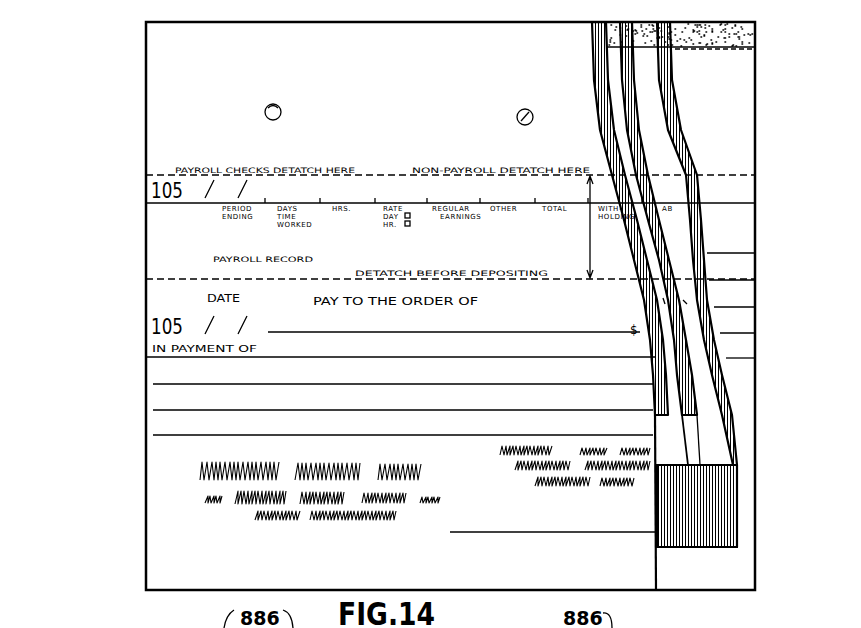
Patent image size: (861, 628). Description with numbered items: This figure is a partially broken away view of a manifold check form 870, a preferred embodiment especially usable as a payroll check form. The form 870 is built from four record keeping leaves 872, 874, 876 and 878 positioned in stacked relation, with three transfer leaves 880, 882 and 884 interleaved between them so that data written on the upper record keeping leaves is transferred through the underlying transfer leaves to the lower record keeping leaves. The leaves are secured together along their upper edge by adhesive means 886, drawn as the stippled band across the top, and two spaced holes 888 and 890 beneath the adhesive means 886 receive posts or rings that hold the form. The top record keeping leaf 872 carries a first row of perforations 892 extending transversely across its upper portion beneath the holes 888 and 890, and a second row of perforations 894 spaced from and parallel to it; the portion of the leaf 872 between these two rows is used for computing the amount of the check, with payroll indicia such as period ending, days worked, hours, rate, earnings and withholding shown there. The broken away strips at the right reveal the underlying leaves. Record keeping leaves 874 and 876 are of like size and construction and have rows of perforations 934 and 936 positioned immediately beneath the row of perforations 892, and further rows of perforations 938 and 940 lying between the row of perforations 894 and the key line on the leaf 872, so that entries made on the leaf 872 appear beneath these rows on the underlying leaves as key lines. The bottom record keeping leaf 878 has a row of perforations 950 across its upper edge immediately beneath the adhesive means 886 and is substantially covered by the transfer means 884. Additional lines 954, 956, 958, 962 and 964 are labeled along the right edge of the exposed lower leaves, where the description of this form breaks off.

The manifold check form 870 is at (143, 561).
The top record keeping leaf 872 is at (150, 494).
The record keeping leaf 874 is at (671, 430).
The record keeping leaf 876 is at (720, 449).
The bottom record keeping leaf 878 is at (748, 504).
The transfer leaf 880 is at (654, 374).
The transfer leaf 882 is at (668, 398).
The transfer leaf 884 is at (738, 404).
The adhesive means 886 is at (633, 80).
The hole or aperture 888 is at (271, 104).
The hole or aperture 890 is at (517, 118).
The first row of perforations 892 is at (327, 175).
The second row of perforations 894 is at (218, 278).
The row of perforations 934 is at (632, 176).
The row of perforations 936 is at (673, 176).
The row of perforations 938 is at (665, 301).
The row of perforations 940 is at (685, 302).
The row of perforations 950 is at (738, 48).
The line 954 is at (740, 253).
The line 956 is at (736, 280).
The line 958 is at (738, 307).
The line 962 is at (740, 333).
The line 964 is at (744, 358).